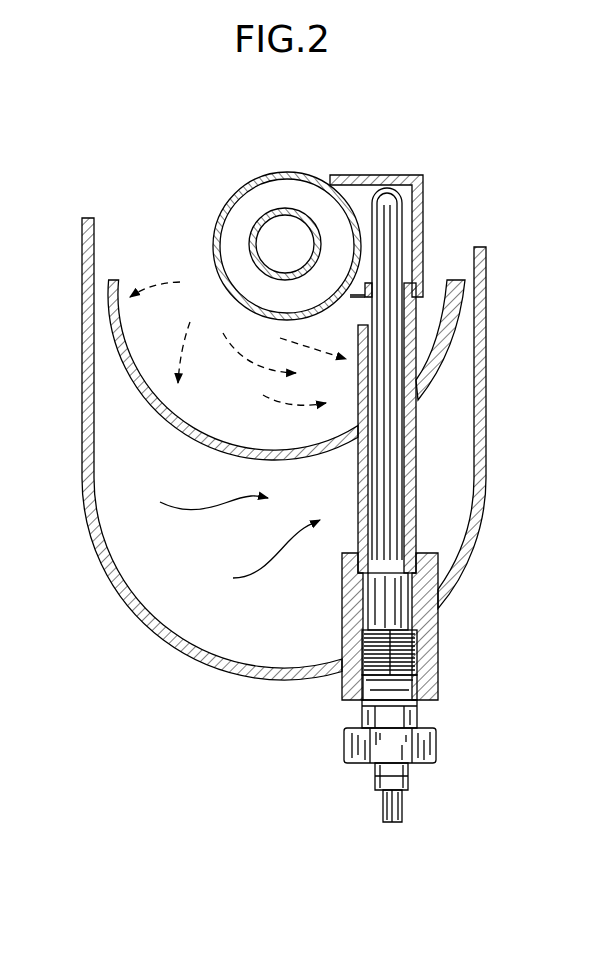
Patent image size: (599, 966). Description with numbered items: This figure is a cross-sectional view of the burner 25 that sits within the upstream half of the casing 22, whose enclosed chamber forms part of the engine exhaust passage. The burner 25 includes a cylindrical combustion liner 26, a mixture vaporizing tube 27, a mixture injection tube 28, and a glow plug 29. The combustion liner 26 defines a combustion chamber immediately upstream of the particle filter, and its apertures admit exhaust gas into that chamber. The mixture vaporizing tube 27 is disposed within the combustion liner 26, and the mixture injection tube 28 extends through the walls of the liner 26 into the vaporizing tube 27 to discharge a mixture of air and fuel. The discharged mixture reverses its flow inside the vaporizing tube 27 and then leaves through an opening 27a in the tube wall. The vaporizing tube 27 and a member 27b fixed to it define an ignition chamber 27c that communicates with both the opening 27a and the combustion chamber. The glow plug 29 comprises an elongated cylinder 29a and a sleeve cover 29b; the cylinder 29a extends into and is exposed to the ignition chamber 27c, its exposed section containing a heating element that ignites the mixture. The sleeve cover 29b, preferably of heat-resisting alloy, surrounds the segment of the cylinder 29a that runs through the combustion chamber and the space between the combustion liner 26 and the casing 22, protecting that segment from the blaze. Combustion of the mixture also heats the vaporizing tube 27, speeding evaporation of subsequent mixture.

The casing 22 is at (168, 632).
The burner 25 is at (181, 451).
The cylindrical combustion liner 26 is at (155, 402).
The mixture vaporizing tube 27 is at (232, 200).
The opening 27a is at (347, 250).
The member 27b is at (418, 189).
The ignition chamber 27c is at (405, 213).
The mixture injection tube 28 is at (252, 237).
The glow plug 29 is at (426, 527).
The elongated cylinder 29a is at (387, 283).
The sleeve cover 29b is at (425, 380).